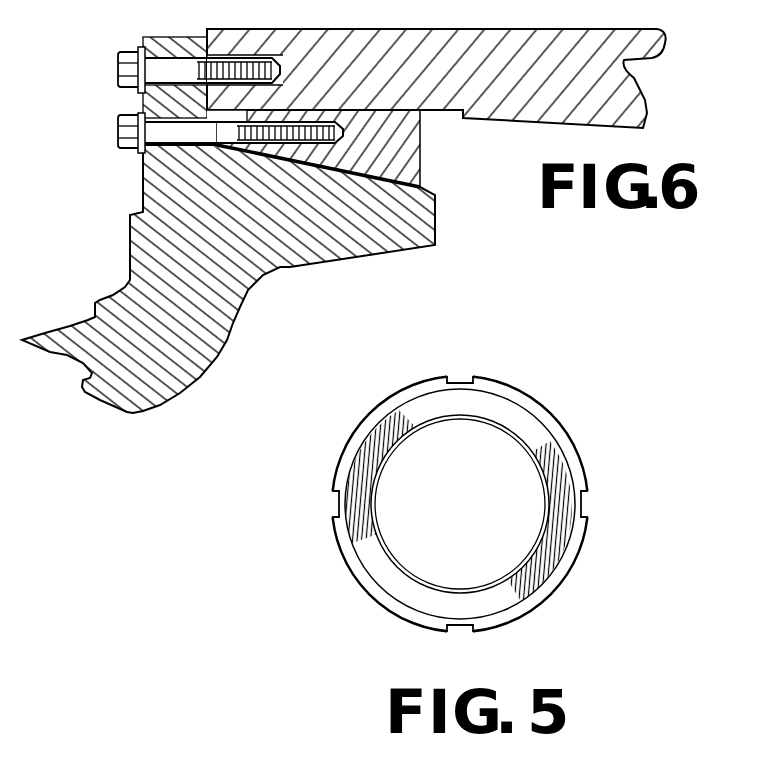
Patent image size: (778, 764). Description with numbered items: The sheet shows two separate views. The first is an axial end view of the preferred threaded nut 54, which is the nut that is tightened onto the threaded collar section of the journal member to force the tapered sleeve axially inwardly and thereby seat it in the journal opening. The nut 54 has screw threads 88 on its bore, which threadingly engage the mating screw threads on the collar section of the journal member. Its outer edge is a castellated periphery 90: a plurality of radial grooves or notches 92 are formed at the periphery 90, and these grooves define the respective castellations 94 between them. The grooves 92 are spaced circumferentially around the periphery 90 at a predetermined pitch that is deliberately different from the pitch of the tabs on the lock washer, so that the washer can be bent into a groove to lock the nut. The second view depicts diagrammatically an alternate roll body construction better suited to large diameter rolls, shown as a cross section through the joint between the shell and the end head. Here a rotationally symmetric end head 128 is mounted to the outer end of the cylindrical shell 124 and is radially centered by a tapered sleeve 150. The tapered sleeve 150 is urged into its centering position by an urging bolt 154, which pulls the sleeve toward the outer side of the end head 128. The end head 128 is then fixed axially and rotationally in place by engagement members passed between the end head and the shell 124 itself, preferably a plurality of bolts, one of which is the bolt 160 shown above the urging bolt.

In FIG. 6, the cylindrical shell 124 is at (393, 40).
In FIG. 6, the end head 128 is at (230, 287).
In FIG. 6, the tapered sleeve 150 is at (420, 150).
In FIG. 6, the urging bolt 154 is at (117, 127).
In FIG. 6, the bolt 160 is at (125, 68).
In FIG. 5, the threaded nut 54 is at (459, 483).
In FIG. 5, the castellated periphery 90 is at (577, 434).
In FIG. 5, the radial grooves or notches 92 is at (460, 376).
In FIG. 5, the castellations 94 is at (373, 415).
In FIG. 5, the screw threads 88 is at (507, 577).